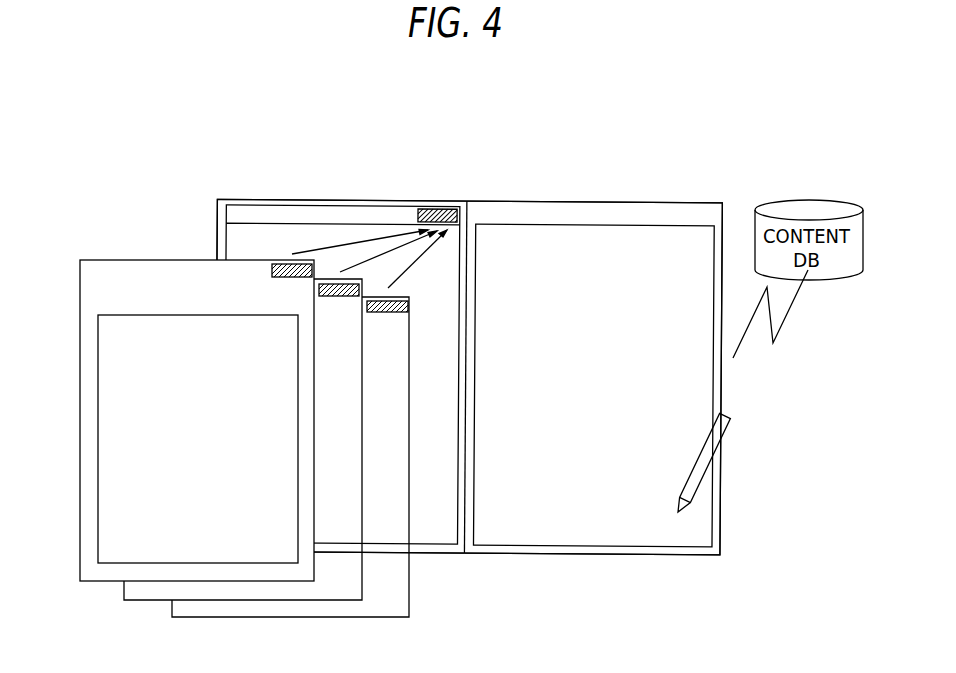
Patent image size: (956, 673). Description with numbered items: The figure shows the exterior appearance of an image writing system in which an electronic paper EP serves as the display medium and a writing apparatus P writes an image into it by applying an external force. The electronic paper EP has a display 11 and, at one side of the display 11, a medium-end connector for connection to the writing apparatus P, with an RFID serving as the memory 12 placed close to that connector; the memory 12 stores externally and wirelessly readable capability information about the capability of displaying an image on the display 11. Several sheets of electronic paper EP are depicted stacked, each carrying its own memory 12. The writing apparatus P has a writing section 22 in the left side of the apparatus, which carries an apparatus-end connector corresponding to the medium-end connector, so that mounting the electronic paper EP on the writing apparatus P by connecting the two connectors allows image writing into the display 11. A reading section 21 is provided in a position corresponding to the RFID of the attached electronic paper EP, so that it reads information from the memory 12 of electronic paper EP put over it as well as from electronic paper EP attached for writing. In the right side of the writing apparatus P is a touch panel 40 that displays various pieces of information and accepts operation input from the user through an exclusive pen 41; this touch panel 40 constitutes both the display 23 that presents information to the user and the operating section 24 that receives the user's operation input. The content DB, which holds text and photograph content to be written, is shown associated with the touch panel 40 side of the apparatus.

The display 11 is at (97, 442).
The memory 12 is at (290, 264).
The reading section 21 is at (437, 209).
The writing section 22 is at (344, 207).
The display 23 is at (341, 376).
The operating section 24 is at (593, 378).
The touch panel 40 is at (720, 385).
The exclusive pen 41 is at (727, 433).
The writing apparatus P is at (593, 201).
The electronic paper EP is at (102, 582).